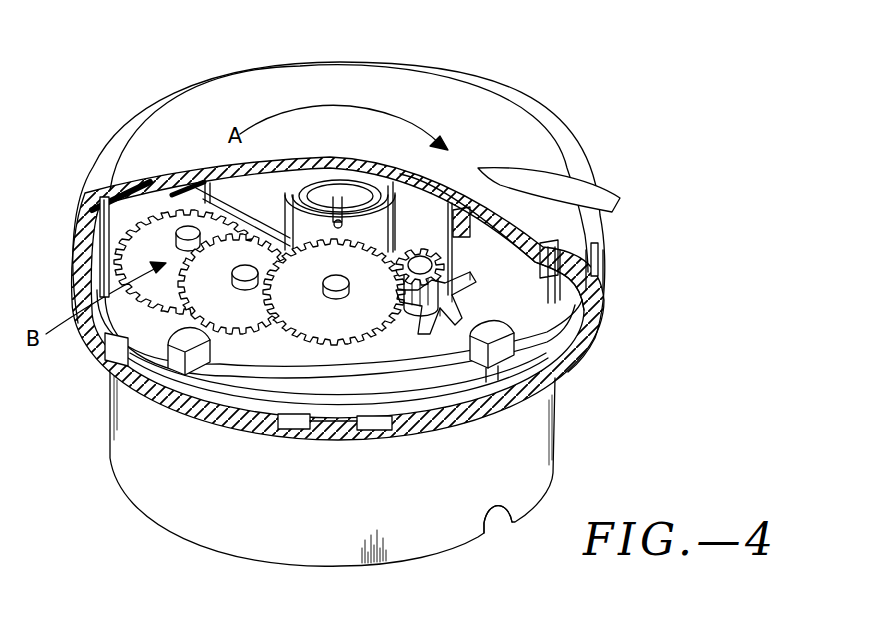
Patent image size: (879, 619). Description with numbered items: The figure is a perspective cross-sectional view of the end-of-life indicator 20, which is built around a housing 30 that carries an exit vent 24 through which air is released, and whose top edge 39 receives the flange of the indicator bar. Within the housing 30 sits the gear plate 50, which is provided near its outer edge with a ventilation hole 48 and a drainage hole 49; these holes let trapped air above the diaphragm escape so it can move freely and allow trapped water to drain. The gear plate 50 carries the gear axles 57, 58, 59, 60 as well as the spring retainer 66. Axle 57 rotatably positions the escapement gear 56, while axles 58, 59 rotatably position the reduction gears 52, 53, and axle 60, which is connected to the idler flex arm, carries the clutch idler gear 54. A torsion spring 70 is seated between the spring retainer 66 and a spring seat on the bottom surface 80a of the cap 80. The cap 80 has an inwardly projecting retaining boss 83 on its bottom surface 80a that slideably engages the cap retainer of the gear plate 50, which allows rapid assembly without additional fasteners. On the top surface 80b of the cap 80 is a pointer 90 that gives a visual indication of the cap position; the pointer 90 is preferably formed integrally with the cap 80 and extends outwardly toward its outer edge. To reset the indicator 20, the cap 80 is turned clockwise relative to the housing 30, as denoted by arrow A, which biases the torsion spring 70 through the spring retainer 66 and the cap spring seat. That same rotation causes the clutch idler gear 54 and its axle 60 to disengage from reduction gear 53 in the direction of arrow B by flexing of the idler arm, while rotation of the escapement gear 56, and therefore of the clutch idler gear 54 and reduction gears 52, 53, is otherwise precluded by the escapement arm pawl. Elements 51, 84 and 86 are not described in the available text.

The indicator 20 is at (400, 41).
The exit vent 24 is at (482, 540).
The housing 30 is at (253, 538).
The top edge 39 is at (601, 285).
The ventilation hole 48 is at (181, 376).
The drainage hole 49 is at (497, 378).
The gear plate 50 is at (381, 363).
The post 51 is at (552, 363).
The reduction gear 52 is at (300, 318).
The reduction gear 53 is at (118, 360).
The clutch idler gear 54 is at (100, 248).
The escapement gear 56 is at (438, 312).
The gear axle 57 is at (432, 262).
The gear axle 58 is at (337, 293).
The gear axle 59 is at (233, 276).
The axle 60 is at (186, 228).
The spring retainer 66 is at (376, 228).
The torsion spring 70 is at (378, 173).
The cap 80 is at (262, 88).
The bottom surface 80a is at (492, 242).
The top surface 80b is at (496, 100).
The retaining boss 83 is at (346, 176).
The tab 84 is at (597, 247).
The slot 86 is at (599, 273).
The pointer 90 is at (566, 188).